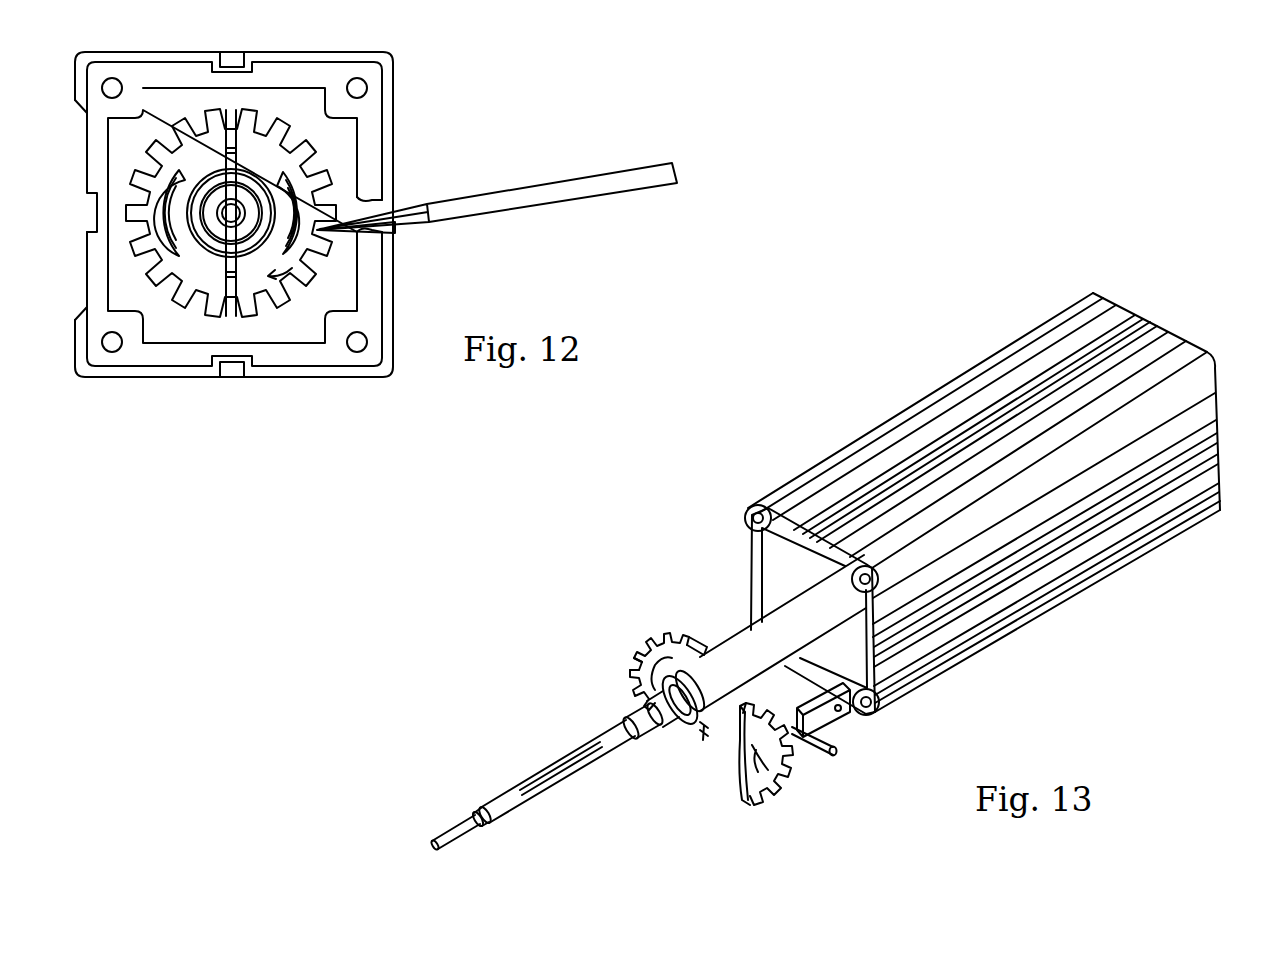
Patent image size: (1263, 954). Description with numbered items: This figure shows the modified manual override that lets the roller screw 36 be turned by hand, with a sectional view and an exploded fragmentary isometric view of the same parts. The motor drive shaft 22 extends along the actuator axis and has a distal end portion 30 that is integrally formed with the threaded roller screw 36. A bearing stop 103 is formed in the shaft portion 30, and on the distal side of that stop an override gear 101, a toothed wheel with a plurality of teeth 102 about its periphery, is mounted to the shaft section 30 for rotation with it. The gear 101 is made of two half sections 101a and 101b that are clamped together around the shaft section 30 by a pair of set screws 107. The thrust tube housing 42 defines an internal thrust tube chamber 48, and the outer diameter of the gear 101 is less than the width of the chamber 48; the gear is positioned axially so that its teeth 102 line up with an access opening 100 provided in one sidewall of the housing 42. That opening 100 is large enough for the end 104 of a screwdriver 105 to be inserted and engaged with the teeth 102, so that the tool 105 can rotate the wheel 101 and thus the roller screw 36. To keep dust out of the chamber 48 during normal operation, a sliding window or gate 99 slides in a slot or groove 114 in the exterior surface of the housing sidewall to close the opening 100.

In FIG. 13, the motor drive shaft 22 is at (609, 742).
In FIG. 13, the distal end portion 30 is at (670, 732).
In FIG. 13, the roller screw 36 is at (750, 650).
In FIG. 12, the thrust tube housing 42 is at (182, 73).
In FIG. 12, the thrust tube chamber 48 is at (287, 97).
In FIG. 13, the sliding window or gate 99 is at (830, 716).
In FIG. 12, the access opening 100 is at (394, 204).
In FIG. 12, the override gear 101 is at (345, 312).
In FIG. 12, the half section 101a is at (192, 130).
In FIG. 13, the half section 101a is at (658, 655).
In FIG. 12, the half section 101b is at (283, 163).
In FIG. 13, the half section 101b is at (762, 812).
In FIG. 12, the teeth 102 is at (160, 138).
In FIG. 13, the teeth 102 is at (672, 636).
In FIG. 13, the bearing stop 103 is at (646, 693).
In FIG. 12, the end of screwdriver 104 is at (392, 240).
In FIG. 12, the screwdriver 105 is at (517, 192).
In FIG. 12, the set screws 107 is at (232, 127).
In FIG. 13, the set screws 107 is at (818, 752).
In FIG. 13, the slot or groove 114 is at (960, 603).